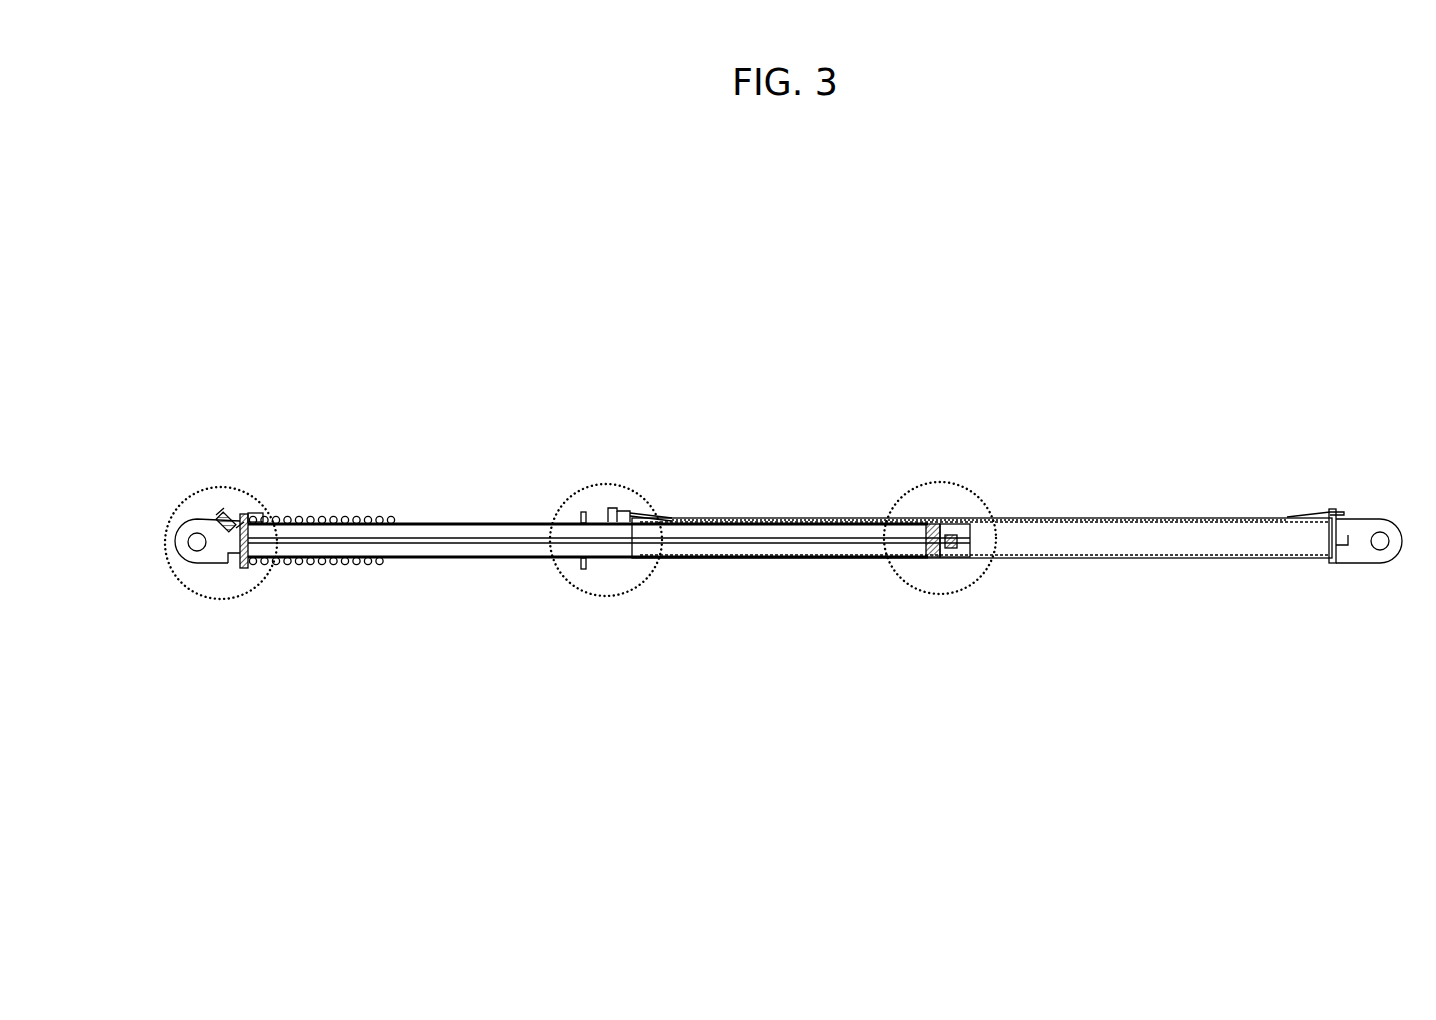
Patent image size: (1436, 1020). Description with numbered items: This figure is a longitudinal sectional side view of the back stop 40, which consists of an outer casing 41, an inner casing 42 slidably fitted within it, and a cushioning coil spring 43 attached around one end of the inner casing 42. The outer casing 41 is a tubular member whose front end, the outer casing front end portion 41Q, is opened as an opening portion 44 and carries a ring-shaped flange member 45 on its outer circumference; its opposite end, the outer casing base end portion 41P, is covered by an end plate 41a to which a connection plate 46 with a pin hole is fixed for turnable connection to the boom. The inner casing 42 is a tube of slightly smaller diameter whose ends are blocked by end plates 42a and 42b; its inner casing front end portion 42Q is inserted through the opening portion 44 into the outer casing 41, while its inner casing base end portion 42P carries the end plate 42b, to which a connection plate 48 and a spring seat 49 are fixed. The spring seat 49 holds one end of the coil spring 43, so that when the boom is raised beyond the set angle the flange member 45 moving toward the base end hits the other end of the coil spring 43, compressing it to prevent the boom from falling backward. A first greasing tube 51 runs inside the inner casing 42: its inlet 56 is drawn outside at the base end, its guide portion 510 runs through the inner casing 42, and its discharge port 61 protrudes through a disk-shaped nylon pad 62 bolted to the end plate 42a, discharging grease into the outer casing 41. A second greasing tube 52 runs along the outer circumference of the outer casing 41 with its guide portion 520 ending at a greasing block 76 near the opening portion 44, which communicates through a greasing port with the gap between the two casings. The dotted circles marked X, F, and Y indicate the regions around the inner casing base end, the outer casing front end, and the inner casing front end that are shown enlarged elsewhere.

The back stop 40 is at (754, 404).
The outer casing 41 is at (1070, 560).
The outer casing base end portion 41P is at (1327, 504).
The outer casing front end portion 41Q is at (607, 575).
The end plate 41a is at (1338, 548).
The inner casing 42 is at (460, 559).
The inner casing base end portion 42P is at (262, 596).
The inner casing front end portion 42Q is at (964, 568).
The end plate 42a is at (920, 559).
The end plate 42b is at (226, 560).
The cushioning coil spring 43 is at (338, 566).
The opening portion 44 is at (580, 559).
The flange member 45 is at (582, 570).
The connection plate 46 is at (1370, 521).
The connection plate 48 is at (196, 556).
The spring seat 49 is at (252, 516).
The first greasing tube 51 is at (484, 537).
The guide portion 510 is at (752, 545).
The second greasing tube 52 is at (1080, 517).
The guide portion 520 is at (1175, 517).
The inlet 56 is at (222, 514).
The discharge port 61 is at (968, 539).
The pad 62 is at (937, 559).
The greasing block 76 is at (611, 510).
The detail region X is at (238, 488).
The detail region F is at (589, 485).
The detail region Y is at (904, 494).